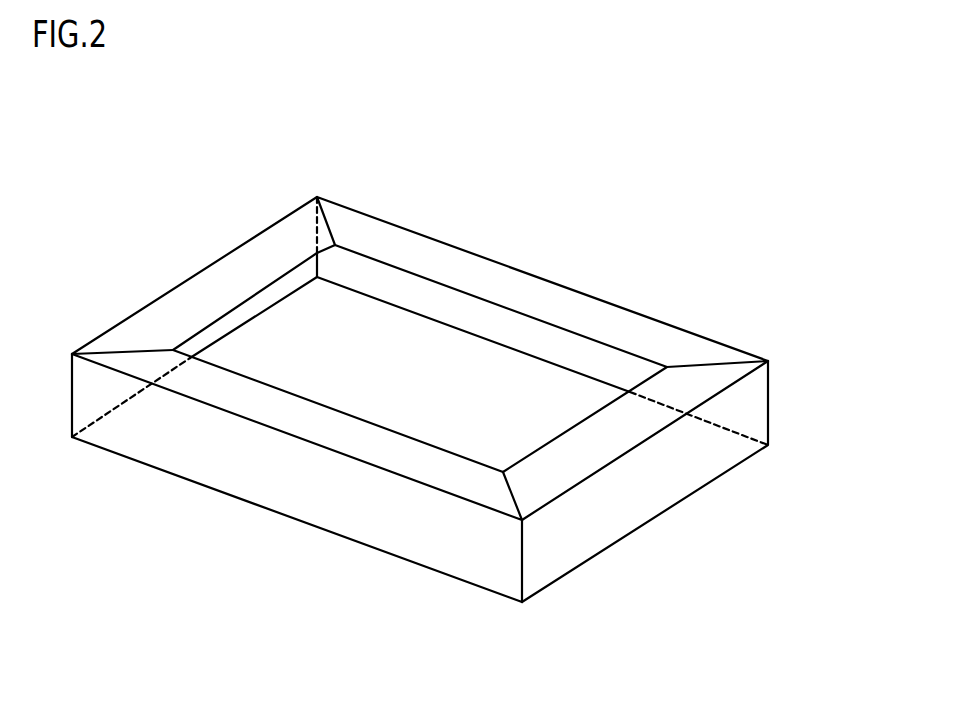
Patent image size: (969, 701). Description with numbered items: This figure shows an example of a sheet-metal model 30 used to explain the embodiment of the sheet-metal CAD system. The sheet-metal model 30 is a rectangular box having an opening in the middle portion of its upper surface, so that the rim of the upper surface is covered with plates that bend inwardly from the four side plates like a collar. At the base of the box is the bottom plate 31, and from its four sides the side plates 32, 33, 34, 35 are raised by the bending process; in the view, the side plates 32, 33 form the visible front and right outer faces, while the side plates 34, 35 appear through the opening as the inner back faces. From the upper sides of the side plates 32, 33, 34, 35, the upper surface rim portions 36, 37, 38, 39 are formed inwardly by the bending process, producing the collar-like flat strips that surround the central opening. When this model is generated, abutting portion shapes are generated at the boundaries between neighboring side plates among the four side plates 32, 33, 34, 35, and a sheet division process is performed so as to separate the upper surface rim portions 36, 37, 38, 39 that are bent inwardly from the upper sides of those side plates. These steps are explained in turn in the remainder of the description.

The sheet-metal model 30 is at (598, 169).
The bottom plate 31 is at (467, 404).
The side plate 32 is at (398, 530).
The side plate 33 is at (647, 495).
The side plate 34 is at (582, 362).
The side plate 35 is at (272, 295).
The upper surface rim portion 36 is at (325, 432).
The upper surface rim portion 37 is at (572, 455).
The upper surface rim portion 38 is at (500, 282).
The upper surface rim portion 39 is at (242, 268).